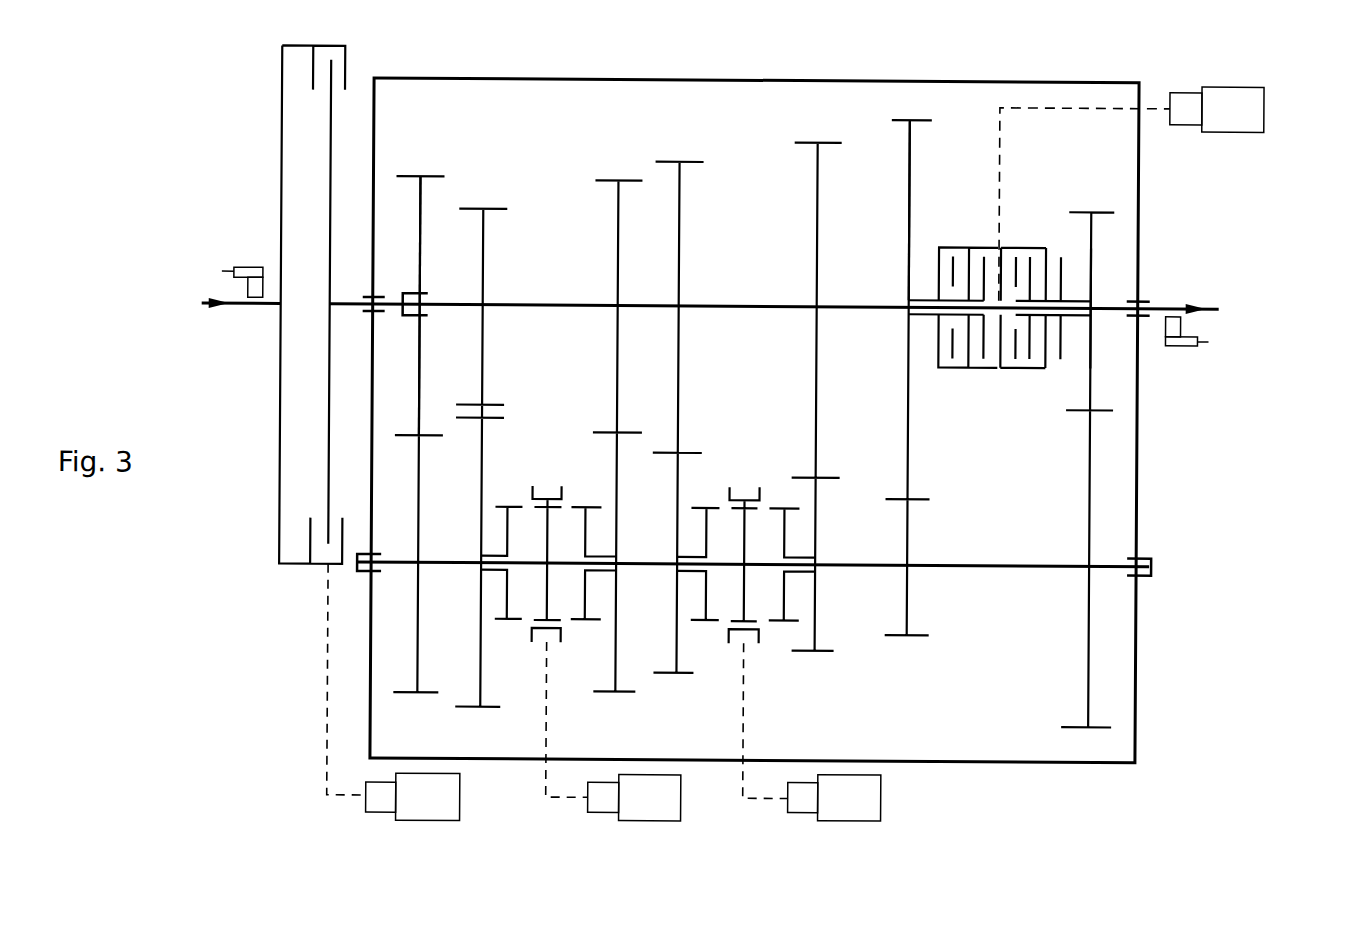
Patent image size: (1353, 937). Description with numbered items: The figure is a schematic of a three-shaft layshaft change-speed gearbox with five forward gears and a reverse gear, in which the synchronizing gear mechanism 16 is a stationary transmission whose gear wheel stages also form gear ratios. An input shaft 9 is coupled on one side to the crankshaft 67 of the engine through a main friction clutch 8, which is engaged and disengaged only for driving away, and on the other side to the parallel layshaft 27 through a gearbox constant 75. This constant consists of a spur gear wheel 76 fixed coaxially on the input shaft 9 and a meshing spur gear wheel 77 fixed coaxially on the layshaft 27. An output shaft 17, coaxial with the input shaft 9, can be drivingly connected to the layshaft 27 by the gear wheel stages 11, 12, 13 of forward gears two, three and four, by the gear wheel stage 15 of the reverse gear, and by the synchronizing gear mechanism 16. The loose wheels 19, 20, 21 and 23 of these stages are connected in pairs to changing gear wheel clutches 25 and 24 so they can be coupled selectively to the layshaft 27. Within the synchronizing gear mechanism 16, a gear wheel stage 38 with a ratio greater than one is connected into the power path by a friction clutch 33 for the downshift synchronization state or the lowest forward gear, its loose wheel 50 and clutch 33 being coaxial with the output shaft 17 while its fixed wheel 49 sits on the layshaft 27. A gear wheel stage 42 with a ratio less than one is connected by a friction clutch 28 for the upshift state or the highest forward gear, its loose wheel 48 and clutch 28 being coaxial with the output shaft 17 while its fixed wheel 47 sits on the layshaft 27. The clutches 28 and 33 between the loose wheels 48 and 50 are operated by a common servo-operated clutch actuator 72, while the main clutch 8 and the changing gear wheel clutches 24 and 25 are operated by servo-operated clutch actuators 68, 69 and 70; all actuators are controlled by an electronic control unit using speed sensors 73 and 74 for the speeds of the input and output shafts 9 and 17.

The main friction clutch 8 is at (292, 572).
The input shaft 9 is at (370, 292).
The gear wheel stage 11 is at (817, 134).
The gear wheel stage 12 is at (680, 154).
The gear wheel stage 13 is at (618, 174).
The gear wheel stage 15 is at (486, 198).
The synchronizing gear mechanism 16 is at (1033, 104).
The output shaft 17 is at (1172, 298).
The loose wheel 19 is at (814, 610).
The loose wheel 20 is at (678, 650).
The loose wheel 21 is at (615, 650).
The loose wheel 23 is at (480, 462).
The changing gear wheel clutch 24 is at (548, 480).
The changing gear wheel clutch 25 is at (745, 480).
The layshaft 27 is at (985, 558).
The friction clutch 28 is at (1032, 376).
The friction clutch 33 is at (962, 376).
The gear wheel stage 38 is at (909, 108).
The gear wheel stage 42 is at (1100, 204).
The fixed wheel 47 is at (1089, 666).
The loose wheel 48 is at (1092, 257).
The fixed wheel 49 is at (908, 600).
The loose wheel 50 is at (910, 180).
The crankshaft 67 is at (254, 314).
The servo-operated clutch actuator 68 is at (450, 826).
The servo-operated clutch actuator 69 is at (637, 825).
The servo-operated clutch actuator 70 is at (831, 824).
The servo-operated clutch actuator 72 is at (1268, 108).
The speed sensor 73 is at (243, 268).
The speed sensor 74 is at (1178, 352).
The gearbox constant 75 is at (420, 172).
The spur gear wheel 76 is at (418, 208).
The spur gear wheel 77 is at (418, 600).